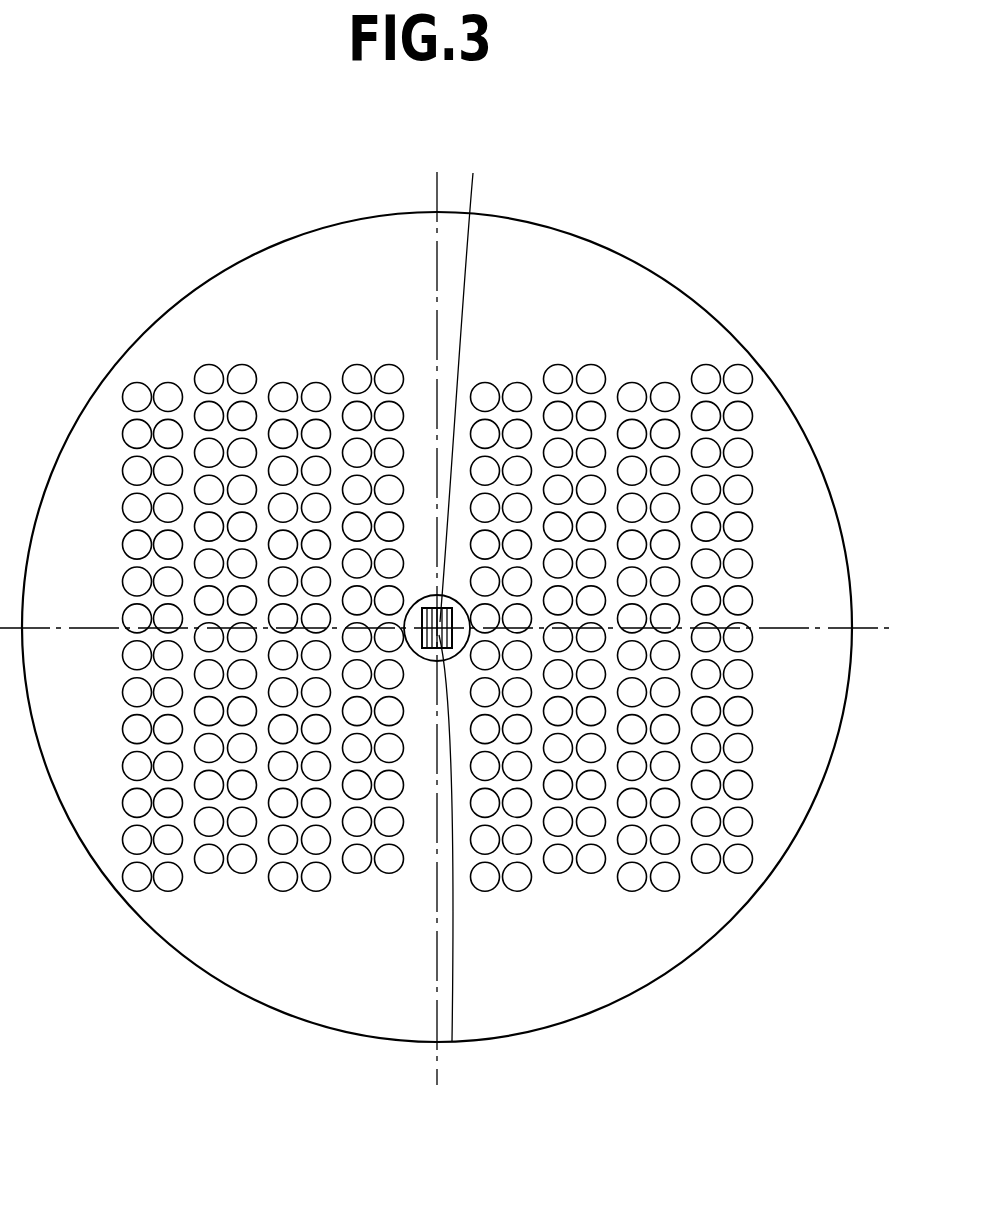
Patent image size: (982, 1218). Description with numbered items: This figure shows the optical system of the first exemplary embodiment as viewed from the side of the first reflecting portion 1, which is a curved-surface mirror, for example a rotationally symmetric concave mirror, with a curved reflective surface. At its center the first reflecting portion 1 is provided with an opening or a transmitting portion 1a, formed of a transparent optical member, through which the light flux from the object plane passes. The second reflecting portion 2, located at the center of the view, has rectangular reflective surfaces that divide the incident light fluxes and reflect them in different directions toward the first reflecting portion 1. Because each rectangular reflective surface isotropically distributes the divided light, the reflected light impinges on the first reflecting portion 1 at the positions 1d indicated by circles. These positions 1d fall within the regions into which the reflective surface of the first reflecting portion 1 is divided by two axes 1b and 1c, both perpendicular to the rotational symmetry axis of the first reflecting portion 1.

The first reflecting portion 1 is at (160, 330).
The transmitting portion 1a is at (466, 384).
The axis 1b is at (435, 197).
The axis 1c is at (862, 628).
The positions 1d is at (737, 377).
The second reflecting portion 2 is at (452, 860).